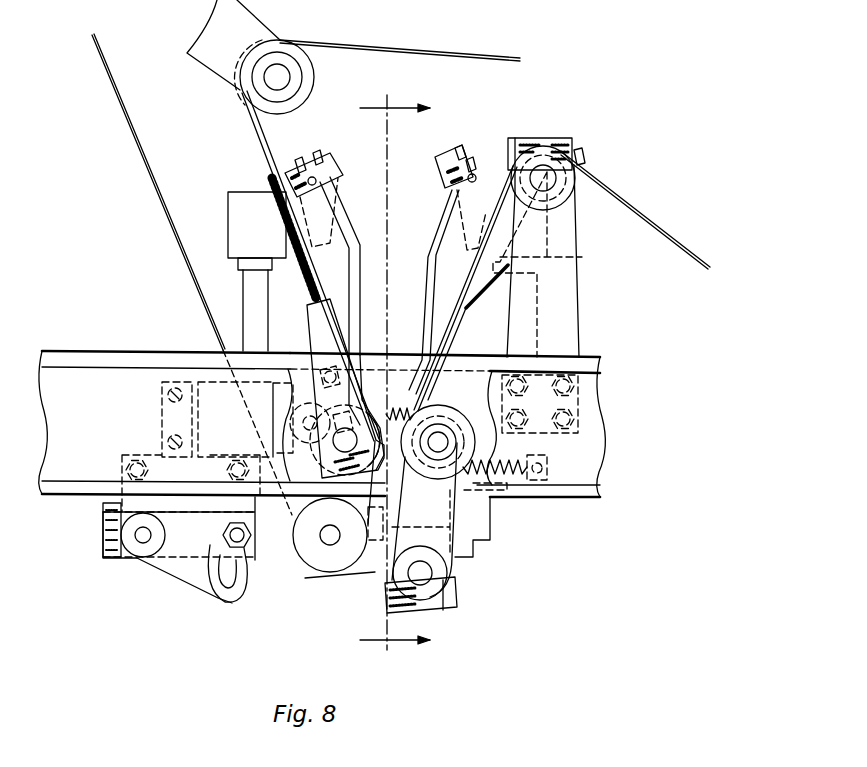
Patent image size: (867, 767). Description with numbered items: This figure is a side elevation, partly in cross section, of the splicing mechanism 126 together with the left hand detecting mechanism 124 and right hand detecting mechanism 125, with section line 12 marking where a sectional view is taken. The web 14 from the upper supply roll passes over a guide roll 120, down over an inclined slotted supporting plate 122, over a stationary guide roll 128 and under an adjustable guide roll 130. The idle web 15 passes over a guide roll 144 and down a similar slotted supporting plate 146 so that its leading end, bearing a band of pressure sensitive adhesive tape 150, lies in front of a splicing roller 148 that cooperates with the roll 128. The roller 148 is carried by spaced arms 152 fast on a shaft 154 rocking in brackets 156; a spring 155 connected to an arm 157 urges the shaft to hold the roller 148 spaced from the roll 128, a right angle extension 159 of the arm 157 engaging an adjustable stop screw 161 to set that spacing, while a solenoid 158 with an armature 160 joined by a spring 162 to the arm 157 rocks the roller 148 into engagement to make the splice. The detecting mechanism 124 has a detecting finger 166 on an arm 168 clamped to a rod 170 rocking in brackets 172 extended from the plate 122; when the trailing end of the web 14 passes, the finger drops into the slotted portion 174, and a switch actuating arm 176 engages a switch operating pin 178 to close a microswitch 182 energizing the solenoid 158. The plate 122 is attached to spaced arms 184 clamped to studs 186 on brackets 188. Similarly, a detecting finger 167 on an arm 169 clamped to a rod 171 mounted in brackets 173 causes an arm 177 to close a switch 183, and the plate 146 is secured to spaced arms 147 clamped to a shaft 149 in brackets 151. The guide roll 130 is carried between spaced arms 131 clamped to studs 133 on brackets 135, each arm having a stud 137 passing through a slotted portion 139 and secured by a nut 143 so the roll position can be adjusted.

The section line 12- 12 is at (395, 376).
The web 14 is at (125, 127).
The idle web 15 is at (458, 307).
The guide roll 120 is at (310, 65).
The slotted supporting plate 122 is at (317, 280).
The left hand detecting mechanism 124 is at (236, 163).
The right hand detecting mechanism 125 is at (594, 205).
The splicing mechanism 126 is at (407, 343).
The guide roll 128 is at (320, 453).
The adjustable guide roll 130 is at (313, 570).
The spaced arms 131 is at (275, 553).
The studs 133 is at (143, 542).
The brackets 135 is at (180, 580).
The stud 137 is at (227, 513).
The slotted portion 139 is at (223, 580).
The nut 143 is at (223, 533).
The guide roll 144 is at (574, 170).
The slotted supporting plate 146 is at (467, 308).
The spaced arms 147 is at (570, 260).
The splicing roller 148 is at (460, 413).
The shaft 149 is at (548, 158).
The pressure sensitive adhesive tape 150 is at (390, 488).
The brackets 151 is at (578, 317).
The spaced arms 152 is at (457, 492).
The shaft 154 is at (420, 585).
The spring 155 is at (513, 453).
The brackets 156 is at (478, 548).
The arm 157 is at (540, 404).
The solenoid 158 is at (255, 440).
The right angle extension 159 is at (370, 577).
The armature 160 is at (327, 388).
The adjustable stop screw 161 is at (305, 575).
The spring 162 is at (440, 375).
The detecting finger 166 is at (340, 210).
The detecting finger 167 is at (447, 197).
The arm 168 is at (337, 167).
The arm 169 is at (450, 157).
The rod 170 is at (332, 145).
The rod 171 is at (472, 175).
The brackets 172 is at (313, 245).
The brackets 173 is at (425, 240).
The slotted portion 174 is at (332, 320).
The switch actuating arm 176 is at (340, 217).
The arm 177 is at (448, 202).
The switch operating pin 178 is at (306, 250).
The microswitch 182 is at (233, 210).
The switch 183 is at (543, 235).
The spaced arms 184 is at (309, 317).
The studs 186 is at (328, 448).
The brackets 188 is at (360, 355).